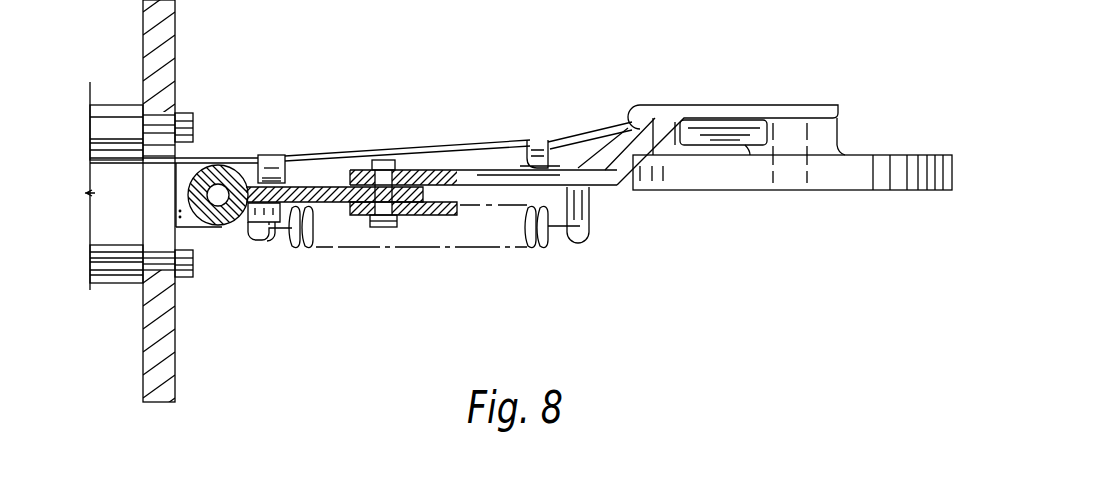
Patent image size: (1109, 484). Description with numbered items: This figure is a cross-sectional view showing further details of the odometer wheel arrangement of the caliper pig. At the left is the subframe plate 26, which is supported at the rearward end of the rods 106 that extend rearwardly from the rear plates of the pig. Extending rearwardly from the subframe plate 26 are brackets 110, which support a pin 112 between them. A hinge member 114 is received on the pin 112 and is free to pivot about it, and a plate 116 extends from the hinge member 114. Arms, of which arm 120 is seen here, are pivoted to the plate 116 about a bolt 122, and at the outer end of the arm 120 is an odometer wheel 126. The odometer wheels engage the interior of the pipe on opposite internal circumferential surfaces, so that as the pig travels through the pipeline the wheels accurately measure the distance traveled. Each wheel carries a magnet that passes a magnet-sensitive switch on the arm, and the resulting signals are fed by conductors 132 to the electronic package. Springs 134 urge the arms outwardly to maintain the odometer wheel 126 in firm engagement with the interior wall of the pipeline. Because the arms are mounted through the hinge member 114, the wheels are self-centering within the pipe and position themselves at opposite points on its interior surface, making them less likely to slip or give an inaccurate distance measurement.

The subframe plate 26 is at (162, 363).
The rods 106 is at (113, 110).
The brackets 110 is at (183, 182).
The pin 112 is at (220, 203).
The hinge member 114 is at (238, 183).
The plate 116 is at (313, 187).
The arm 120 is at (512, 173).
The bolt 122 is at (393, 219).
The odometer wheel 126 is at (720, 180).
The conductors 132 is at (415, 153).
The springs 134 is at (310, 248).